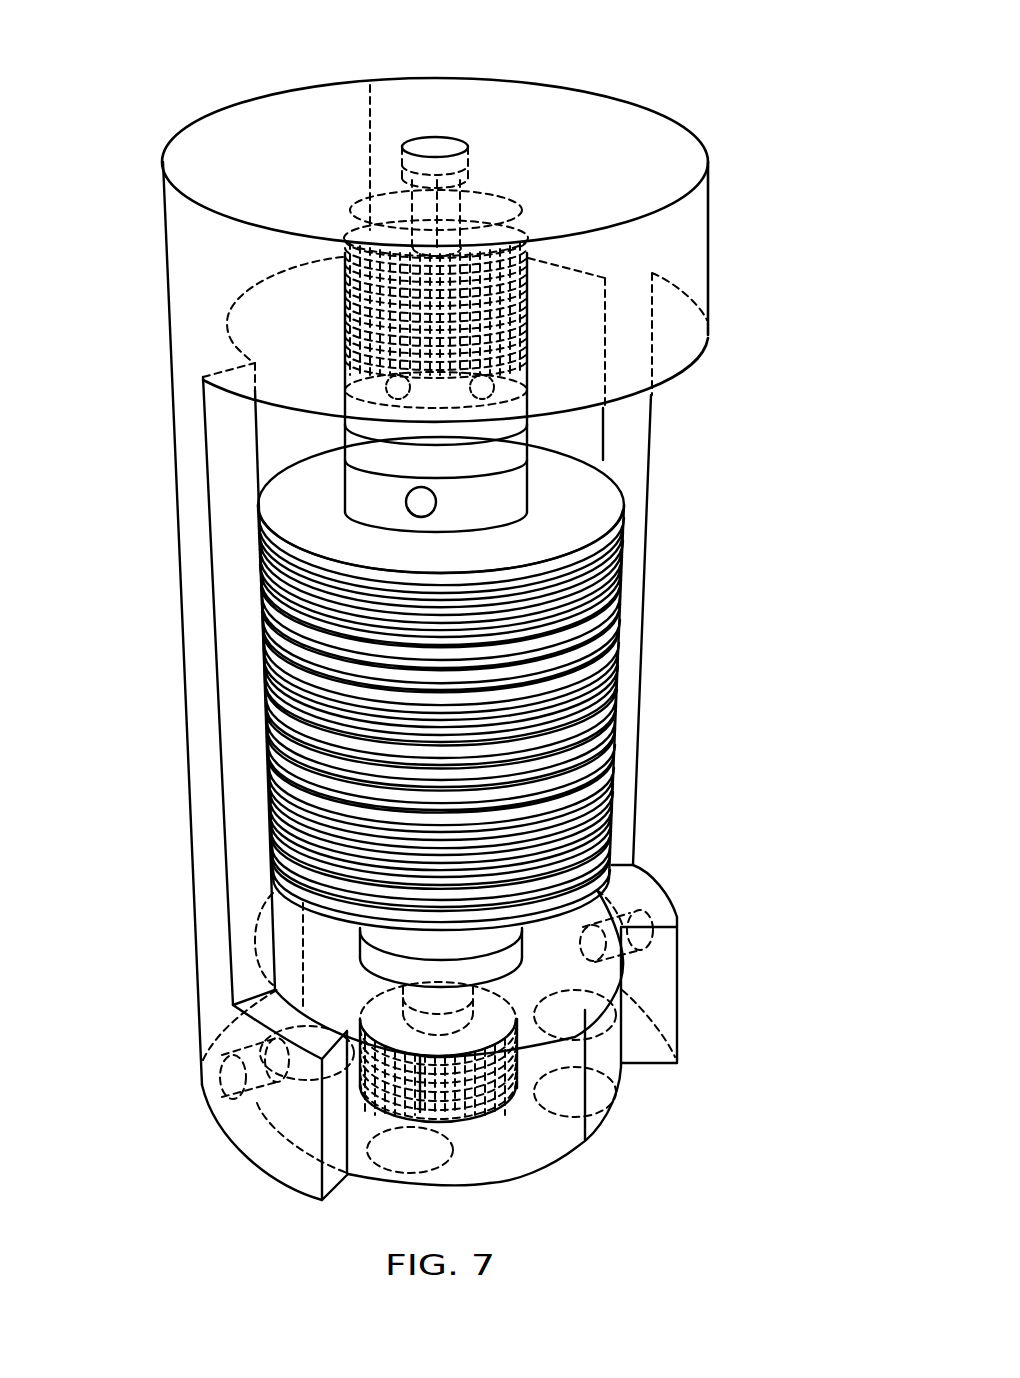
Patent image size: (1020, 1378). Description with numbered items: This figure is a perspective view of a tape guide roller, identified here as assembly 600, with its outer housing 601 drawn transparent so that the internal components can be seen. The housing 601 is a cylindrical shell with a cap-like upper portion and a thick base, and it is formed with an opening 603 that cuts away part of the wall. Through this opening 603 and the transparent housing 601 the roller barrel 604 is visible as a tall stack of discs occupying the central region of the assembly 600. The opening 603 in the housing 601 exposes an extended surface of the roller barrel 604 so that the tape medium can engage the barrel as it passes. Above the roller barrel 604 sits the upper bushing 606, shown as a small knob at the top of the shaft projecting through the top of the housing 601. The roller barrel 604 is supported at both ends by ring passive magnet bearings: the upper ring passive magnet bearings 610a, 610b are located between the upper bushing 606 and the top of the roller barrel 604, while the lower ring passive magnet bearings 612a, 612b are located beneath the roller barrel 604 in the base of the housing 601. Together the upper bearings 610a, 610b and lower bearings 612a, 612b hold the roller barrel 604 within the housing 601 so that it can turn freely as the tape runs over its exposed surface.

The actuator assembly 600 is at (613, 82).
The housing 601 is at (197, 623).
The opening 603 is at (670, 488).
The roller barrel 604 is at (622, 597).
The upper bushing 606 is at (470, 160).
The upper ring passive magnet bearing 610a is at (358, 403).
The upper ring passive magnet bearing 610b is at (358, 440).
The lower ring passive magnet bearing 612a is at (480, 943).
The lower ring passive magnet bearing 612b is at (480, 975).